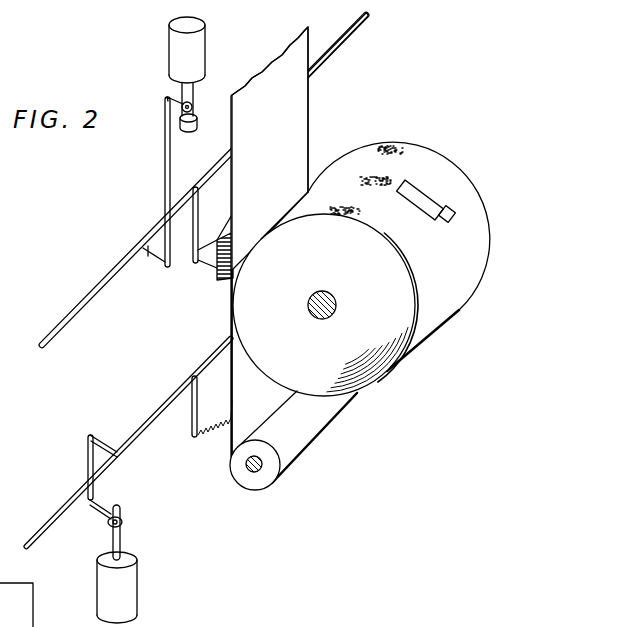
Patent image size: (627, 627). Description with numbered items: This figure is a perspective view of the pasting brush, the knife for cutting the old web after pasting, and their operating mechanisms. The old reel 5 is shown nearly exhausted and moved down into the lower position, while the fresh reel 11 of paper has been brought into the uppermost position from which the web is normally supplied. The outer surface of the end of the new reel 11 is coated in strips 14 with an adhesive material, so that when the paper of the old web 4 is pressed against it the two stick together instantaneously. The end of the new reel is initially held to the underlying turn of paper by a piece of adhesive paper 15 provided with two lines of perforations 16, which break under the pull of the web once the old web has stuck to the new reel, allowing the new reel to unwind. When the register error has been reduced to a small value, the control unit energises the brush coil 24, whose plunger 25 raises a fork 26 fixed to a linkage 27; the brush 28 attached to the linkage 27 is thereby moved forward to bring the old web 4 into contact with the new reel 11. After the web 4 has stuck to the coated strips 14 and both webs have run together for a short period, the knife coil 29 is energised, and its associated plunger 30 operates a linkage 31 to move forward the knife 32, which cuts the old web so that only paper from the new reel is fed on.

The old web 4 is at (240, 432).
The reel 5 is at (296, 447).
The fresh reel 11 is at (470, 232).
The strips 14 is at (390, 148).
The adhesive paper 15 is at (440, 200).
The lines of perforations 16 is at (452, 211).
The brush coil 24 is at (196, 56).
The plunger 25 is at (185, 92).
The fork 26 is at (193, 107).
The linkage 27 is at (166, 258).
The brush 28 is at (212, 270).
The knife coil 29 is at (128, 583).
The plunger 30 is at (121, 543).
The linkage 31 is at (102, 440).
The knife 32 is at (195, 440).